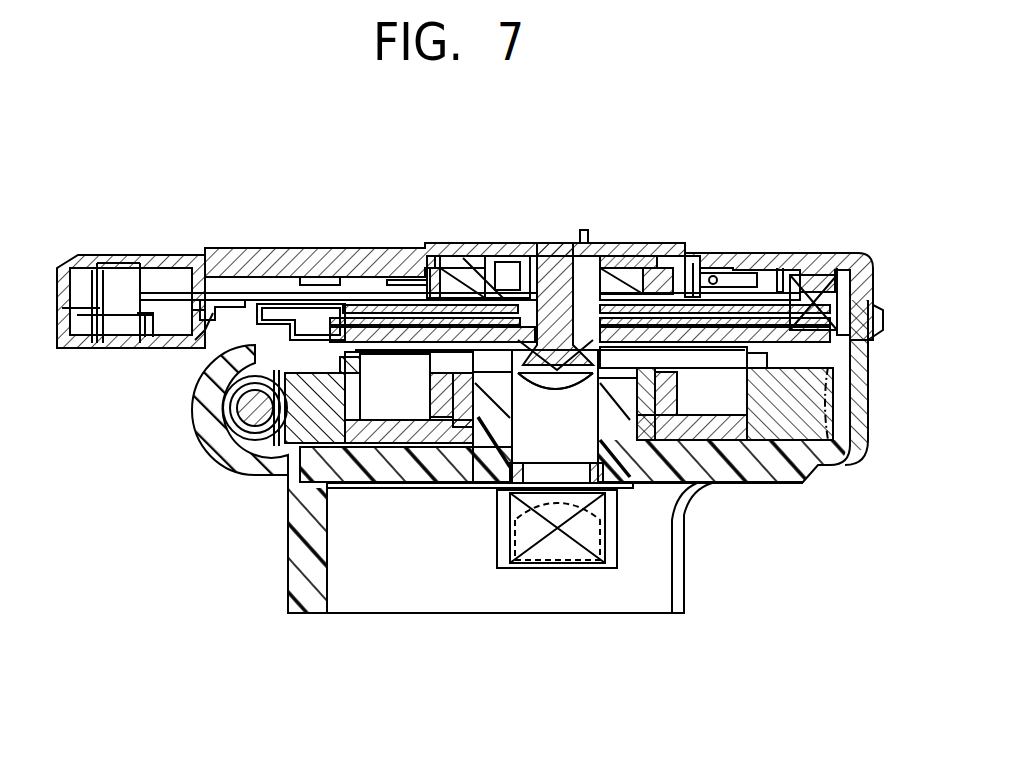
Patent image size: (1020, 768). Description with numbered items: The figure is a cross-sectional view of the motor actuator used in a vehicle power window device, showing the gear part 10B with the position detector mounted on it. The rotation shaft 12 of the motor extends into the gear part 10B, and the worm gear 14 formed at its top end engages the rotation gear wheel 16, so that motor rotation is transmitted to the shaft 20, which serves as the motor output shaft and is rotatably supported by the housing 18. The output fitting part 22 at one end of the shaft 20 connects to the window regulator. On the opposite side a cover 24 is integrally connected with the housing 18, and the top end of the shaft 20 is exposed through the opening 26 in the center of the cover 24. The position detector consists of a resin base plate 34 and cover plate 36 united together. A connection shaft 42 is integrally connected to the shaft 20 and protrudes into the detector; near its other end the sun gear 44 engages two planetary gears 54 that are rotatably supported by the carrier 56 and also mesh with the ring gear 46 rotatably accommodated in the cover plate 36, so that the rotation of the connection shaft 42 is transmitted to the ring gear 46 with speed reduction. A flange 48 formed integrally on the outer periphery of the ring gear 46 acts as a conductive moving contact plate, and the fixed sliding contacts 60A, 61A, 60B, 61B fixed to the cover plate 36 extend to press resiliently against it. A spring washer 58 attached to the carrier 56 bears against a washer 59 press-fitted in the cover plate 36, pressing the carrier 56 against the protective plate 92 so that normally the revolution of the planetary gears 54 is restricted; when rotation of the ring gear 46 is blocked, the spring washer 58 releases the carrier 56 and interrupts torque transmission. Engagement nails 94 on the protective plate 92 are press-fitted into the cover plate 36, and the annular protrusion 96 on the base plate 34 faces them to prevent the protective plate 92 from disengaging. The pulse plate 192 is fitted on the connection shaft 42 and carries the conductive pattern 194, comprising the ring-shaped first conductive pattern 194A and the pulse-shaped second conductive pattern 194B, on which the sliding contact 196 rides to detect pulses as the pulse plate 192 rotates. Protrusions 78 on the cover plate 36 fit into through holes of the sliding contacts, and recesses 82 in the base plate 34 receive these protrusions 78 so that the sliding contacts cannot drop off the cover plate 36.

The gear part 10B is at (267, 492).
The rotation shaft 12 is at (240, 408).
The worm gear 14 is at (215, 430).
The rotation gear wheel 16 is at (833, 400).
The housing 18 is at (748, 487).
The shaft 20 is at (586, 428).
The output fitting part 22 is at (578, 572).
The cover 24 is at (868, 338).
The opening 26 is at (595, 433).
The base plate 34 is at (208, 330).
The cover plate 36 is at (290, 252).
The connection shaft 42 is at (540, 262).
The sun gear 44 is at (583, 248).
The ring gear 46 is at (660, 262).
The flange 48 is at (430, 256).
The planetary gears 54 is at (462, 268).
The carrier 56 is at (490, 258).
The spring washer 58 is at (628, 268).
The washer 59 is at (610, 268).
The fixed sliding contact 60A is at (353, 300).
The fixed sliding contact 60B is at (426, 204).
The fixed sliding contact 61A is at (416, 231).
The fixed sliding contact 61B is at (599, 231).
The protrusions 78 is at (256, 340).
The recesses 82 is at (197, 254).
The protective plate 92 is at (722, 266).
The engagement nails 94 is at (762, 258).
The protrusion 96 is at (843, 262).
The pulse plate 192 is at (700, 258).
The conductive pattern 194 is at (470, 237).
The first conductive pattern 194A is at (396, 310).
The second conductive pattern 194B is at (790, 262).
The sliding contact 196 is at (320, 250).